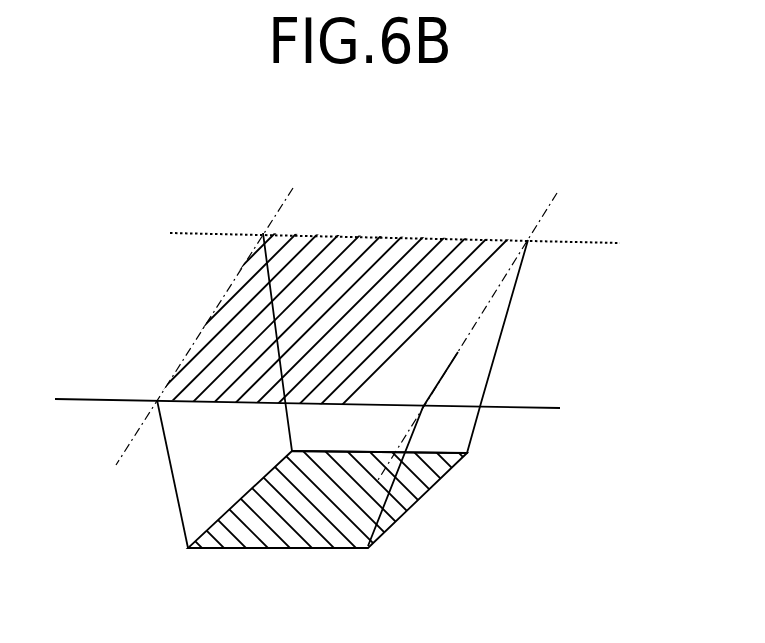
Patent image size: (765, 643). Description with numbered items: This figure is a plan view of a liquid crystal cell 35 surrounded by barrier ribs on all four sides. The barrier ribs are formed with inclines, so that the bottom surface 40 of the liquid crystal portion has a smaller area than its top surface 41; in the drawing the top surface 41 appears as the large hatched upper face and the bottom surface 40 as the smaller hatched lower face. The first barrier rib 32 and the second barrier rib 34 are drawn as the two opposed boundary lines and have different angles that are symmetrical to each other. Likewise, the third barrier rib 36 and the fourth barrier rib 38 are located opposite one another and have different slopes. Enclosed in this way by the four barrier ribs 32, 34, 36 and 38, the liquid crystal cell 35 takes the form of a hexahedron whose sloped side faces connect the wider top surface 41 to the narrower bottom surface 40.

The first barrier rib 32 is at (575, 244).
The second barrier rib 34 is at (513, 410).
The liquid crystal cell 35 is at (317, 427).
The third barrier rib 36 is at (545, 212).
The fourth barrier rib 38 is at (283, 203).
The bottom surface 40 is at (310, 538).
The top surface 41 is at (399, 256).